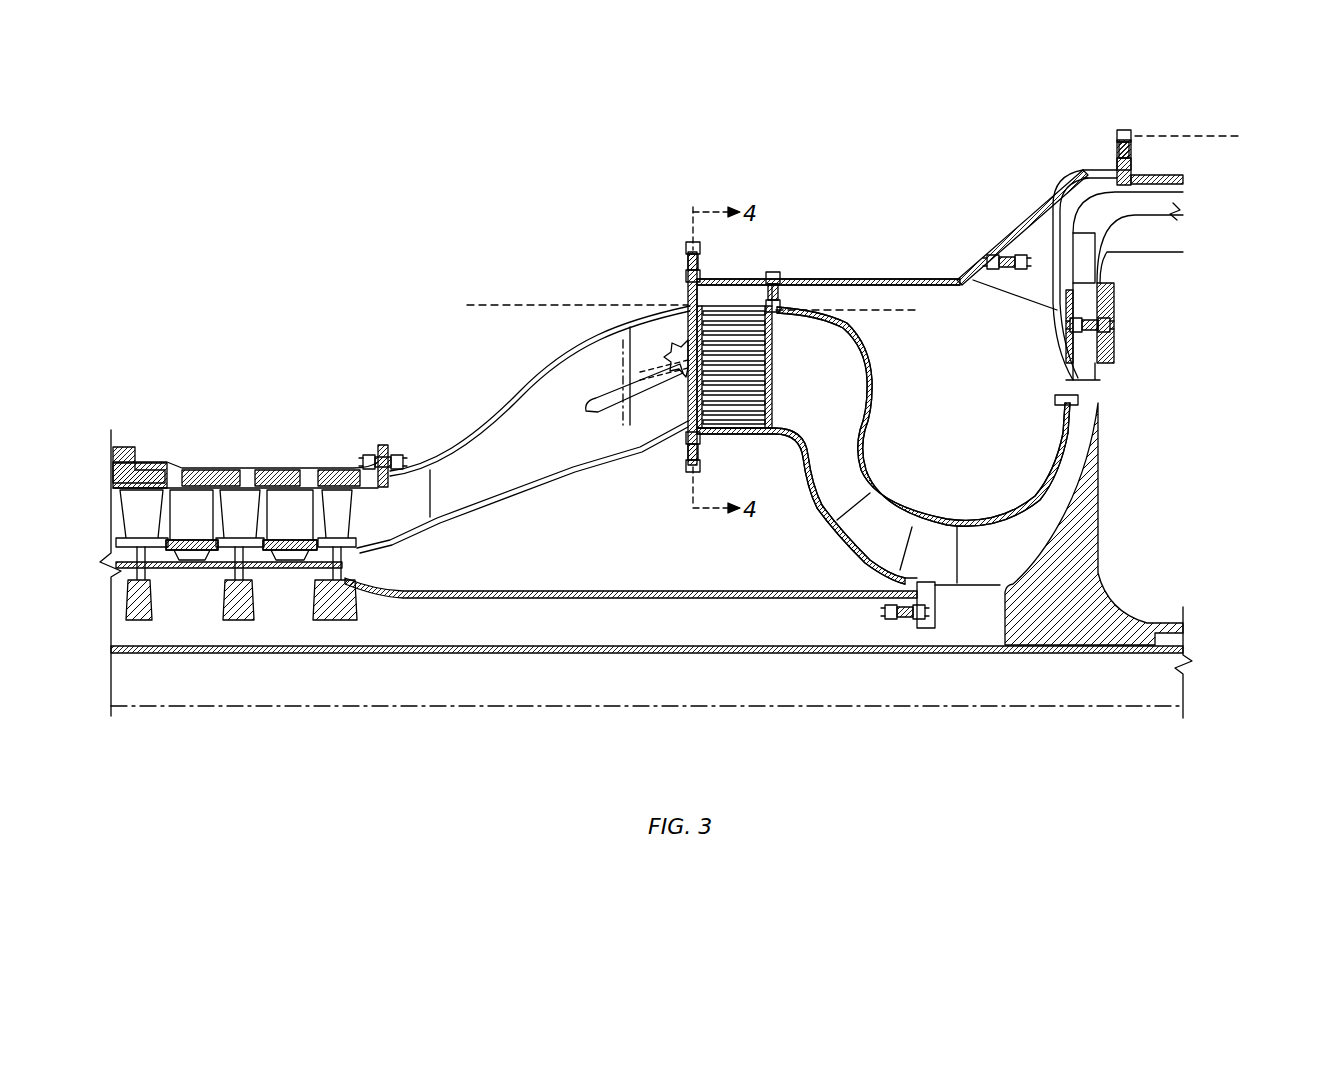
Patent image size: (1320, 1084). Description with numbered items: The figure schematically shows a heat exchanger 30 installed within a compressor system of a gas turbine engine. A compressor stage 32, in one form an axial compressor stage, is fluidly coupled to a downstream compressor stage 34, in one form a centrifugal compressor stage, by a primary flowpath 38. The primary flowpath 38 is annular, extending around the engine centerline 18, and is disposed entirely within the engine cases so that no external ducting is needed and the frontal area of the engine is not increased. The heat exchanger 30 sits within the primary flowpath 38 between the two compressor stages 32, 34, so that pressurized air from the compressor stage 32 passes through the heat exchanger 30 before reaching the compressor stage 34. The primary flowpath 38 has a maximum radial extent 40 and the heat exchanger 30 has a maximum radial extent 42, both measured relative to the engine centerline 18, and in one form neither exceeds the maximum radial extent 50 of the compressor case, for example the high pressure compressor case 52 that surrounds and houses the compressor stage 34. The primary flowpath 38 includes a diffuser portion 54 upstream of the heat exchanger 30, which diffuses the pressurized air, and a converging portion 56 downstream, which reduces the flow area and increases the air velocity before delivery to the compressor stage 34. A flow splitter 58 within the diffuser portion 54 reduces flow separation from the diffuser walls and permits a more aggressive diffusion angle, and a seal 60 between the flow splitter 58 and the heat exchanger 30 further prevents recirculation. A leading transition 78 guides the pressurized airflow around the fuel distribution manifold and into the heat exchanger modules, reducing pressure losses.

The engine centerline 18 is at (912, 708).
The heat exchanger 30 is at (778, 375).
The compressor stage 32 is at (327, 446).
The compressor stage 34 is at (1103, 535).
The primary flowpath 38 is at (583, 282).
The maximum radial extent 40 is at (500, 308).
The maximum radial extent 42 is at (898, 312).
The maximum radial extent 50 is at (1237, 138).
The high pressure compressor case 52 is at (1156, 183).
The diffuser portion 54 is at (512, 490).
The converging portion 56 is at (872, 420).
The flow splitter 58 is at (604, 408).
The seal 60 is at (687, 350).
The leading transition 78 is at (626, 420).